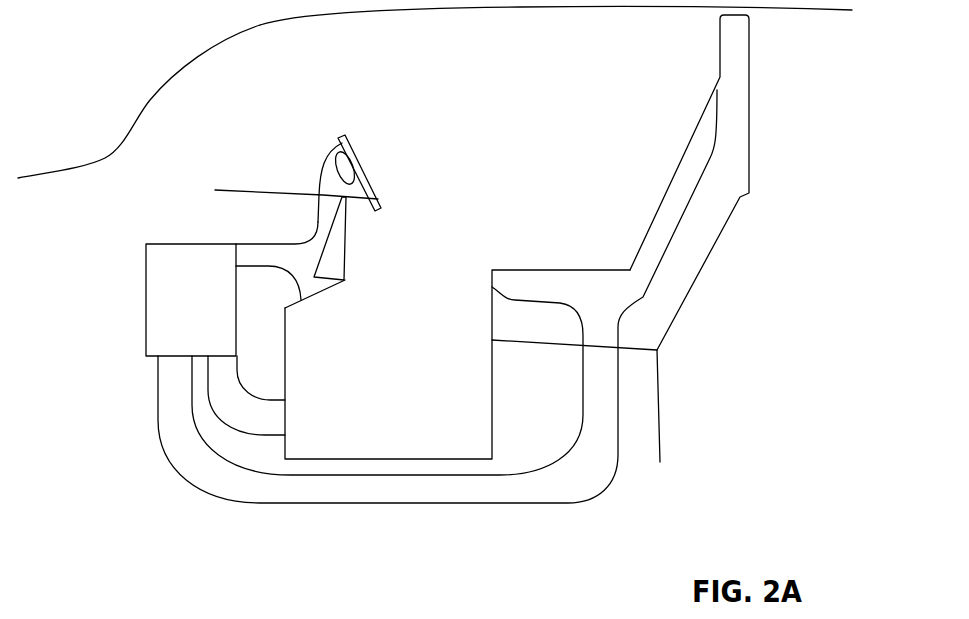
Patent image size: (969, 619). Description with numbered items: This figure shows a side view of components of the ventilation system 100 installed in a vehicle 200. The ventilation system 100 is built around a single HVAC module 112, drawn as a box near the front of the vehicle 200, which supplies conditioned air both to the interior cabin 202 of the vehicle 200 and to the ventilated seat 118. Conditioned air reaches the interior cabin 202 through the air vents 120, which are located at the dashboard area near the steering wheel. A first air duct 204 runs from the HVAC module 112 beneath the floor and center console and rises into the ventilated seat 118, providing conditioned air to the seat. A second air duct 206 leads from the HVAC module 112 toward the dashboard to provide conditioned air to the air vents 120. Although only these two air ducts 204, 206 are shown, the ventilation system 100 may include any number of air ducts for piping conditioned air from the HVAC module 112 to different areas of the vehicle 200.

The ventilation system 100 is at (485, 66).
The HVAC module 112 is at (145, 280).
The ventilated seat 118 is at (750, 30).
The air vents 120 is at (363, 167).
The vehicle 200 is at (143, 110).
The interior cabin 202 is at (280, 63).
The first air duct 204 is at (523, 487).
The second air duct 206 is at (262, 250).